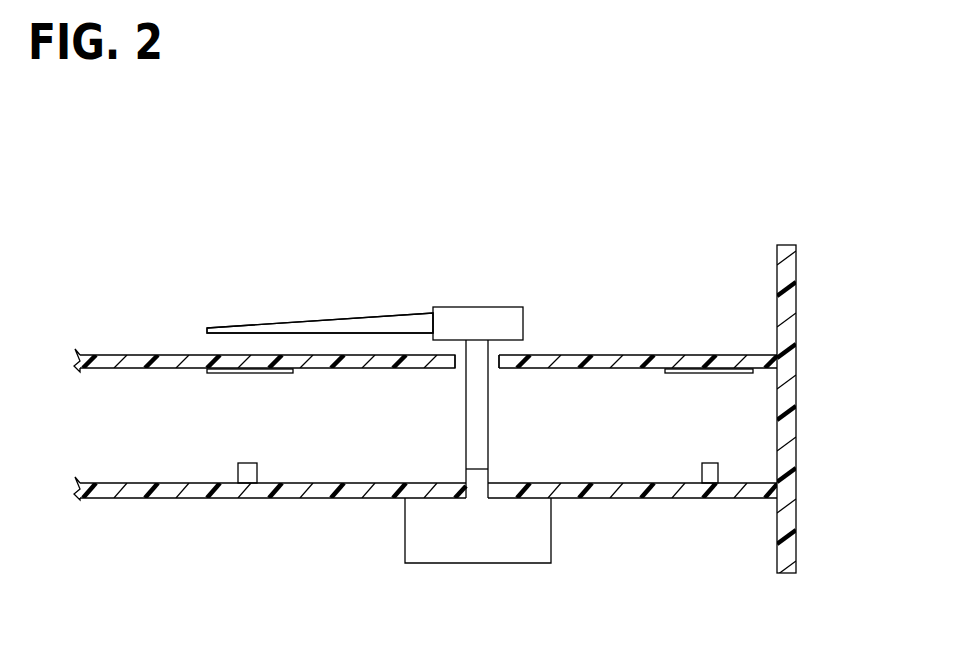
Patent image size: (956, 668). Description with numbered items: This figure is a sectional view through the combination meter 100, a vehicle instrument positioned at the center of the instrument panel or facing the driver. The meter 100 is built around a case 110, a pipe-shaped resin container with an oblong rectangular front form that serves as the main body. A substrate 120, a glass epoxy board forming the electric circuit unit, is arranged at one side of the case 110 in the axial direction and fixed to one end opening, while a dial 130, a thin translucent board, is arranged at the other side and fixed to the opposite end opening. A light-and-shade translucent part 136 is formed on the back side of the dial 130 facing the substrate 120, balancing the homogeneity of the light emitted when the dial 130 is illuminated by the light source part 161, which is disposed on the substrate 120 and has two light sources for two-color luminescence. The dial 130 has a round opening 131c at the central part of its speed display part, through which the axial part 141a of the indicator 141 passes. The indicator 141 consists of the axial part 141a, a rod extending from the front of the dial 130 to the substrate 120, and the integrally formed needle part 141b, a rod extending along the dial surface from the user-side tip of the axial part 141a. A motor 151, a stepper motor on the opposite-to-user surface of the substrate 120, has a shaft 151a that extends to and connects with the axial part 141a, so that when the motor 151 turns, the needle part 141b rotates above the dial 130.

The combination meter 100 is at (172, 294).
The case 110 is at (797, 410).
The substrate 120 is at (128, 499).
The dial 130 is at (108, 355).
The opening 131c is at (500, 349).
The light-and-shade translucent part 136 is at (248, 375).
The indicator 141 is at (267, 320).
The axial part 141a is at (466, 410).
The needle part 141b is at (340, 319).
The motor 151 is at (425, 565).
The shaft 151a is at (467, 480).
The light source part 161 is at (257, 473).